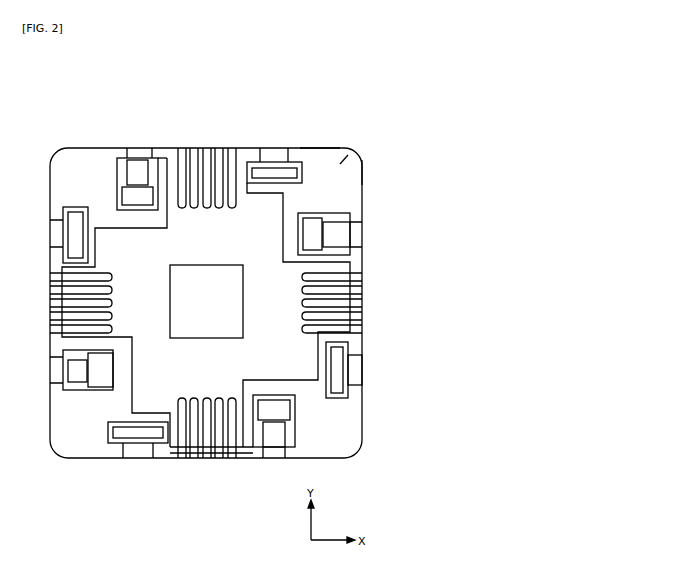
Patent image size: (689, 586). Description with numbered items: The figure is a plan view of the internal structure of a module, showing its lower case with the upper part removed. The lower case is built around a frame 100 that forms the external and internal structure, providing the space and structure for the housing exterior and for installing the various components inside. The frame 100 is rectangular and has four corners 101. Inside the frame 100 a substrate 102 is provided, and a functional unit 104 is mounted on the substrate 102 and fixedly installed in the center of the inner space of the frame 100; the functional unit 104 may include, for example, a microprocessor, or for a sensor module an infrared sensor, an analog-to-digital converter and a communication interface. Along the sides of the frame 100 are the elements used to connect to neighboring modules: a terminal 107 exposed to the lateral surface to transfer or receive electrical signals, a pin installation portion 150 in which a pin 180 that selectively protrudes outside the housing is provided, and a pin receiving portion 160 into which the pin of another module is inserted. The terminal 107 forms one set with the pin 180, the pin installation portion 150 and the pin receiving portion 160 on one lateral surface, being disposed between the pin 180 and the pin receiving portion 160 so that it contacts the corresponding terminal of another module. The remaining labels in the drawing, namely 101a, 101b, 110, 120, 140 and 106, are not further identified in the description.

The frame 100 is at (80, 144).
The corners 101 is at (352, 151).
The side surface of substrate 101a is at (363, 172).
The upper surface of substrate 101b is at (323, 147).
The substrate 110 is at (214, 91).
The connection terminals 120 is at (233, 147).
The wiring pattern 140 is at (250, 160).
The pin receiving portion 160 is at (292, 148).
The pin installation portion 150 is at (338, 214).
The pin 180 is at (338, 231).
The functional unit 104 is at (243, 296).
The substrate 102 is at (307, 371).
The passive element 106 is at (178, 448).
The terminal 107 is at (186, 461).